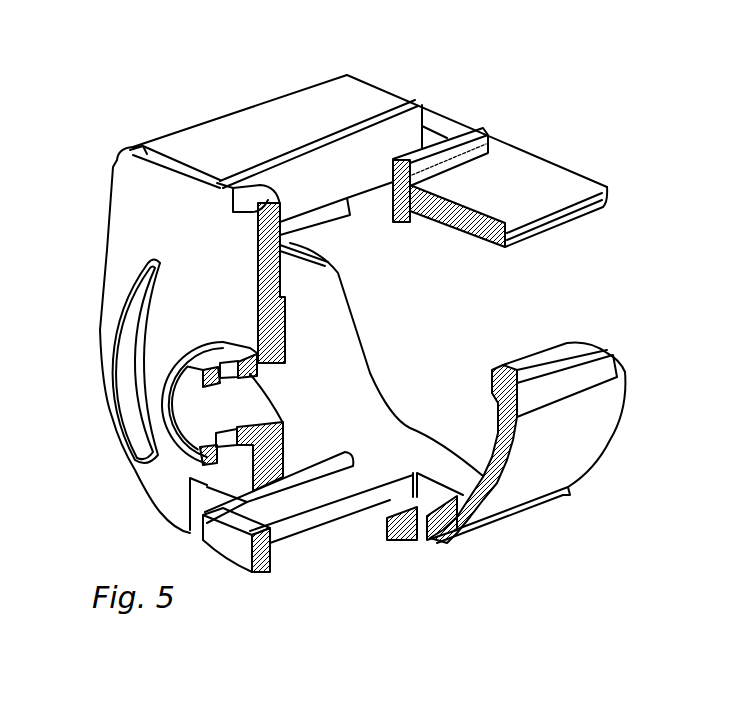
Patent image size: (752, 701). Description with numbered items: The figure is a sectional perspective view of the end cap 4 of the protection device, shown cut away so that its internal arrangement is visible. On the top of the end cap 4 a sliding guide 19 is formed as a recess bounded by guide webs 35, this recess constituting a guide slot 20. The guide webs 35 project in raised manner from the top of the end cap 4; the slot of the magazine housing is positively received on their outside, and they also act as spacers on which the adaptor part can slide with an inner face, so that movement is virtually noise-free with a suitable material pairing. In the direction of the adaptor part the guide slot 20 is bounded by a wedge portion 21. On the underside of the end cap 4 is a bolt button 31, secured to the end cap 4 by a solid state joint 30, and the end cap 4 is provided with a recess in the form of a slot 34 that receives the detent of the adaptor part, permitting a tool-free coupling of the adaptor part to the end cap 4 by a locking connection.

The sliding guide 19 is at (255, 147).
The guide webs 35 is at (302, 153).
The guide slot 20 is at (367, 171).
The end cap 4 is at (541, 177).
The wedge portion 21 is at (250, 207).
The solid state joint 30 is at (372, 475).
The slot 34 is at (335, 520).
The bolt button 31 is at (242, 545).